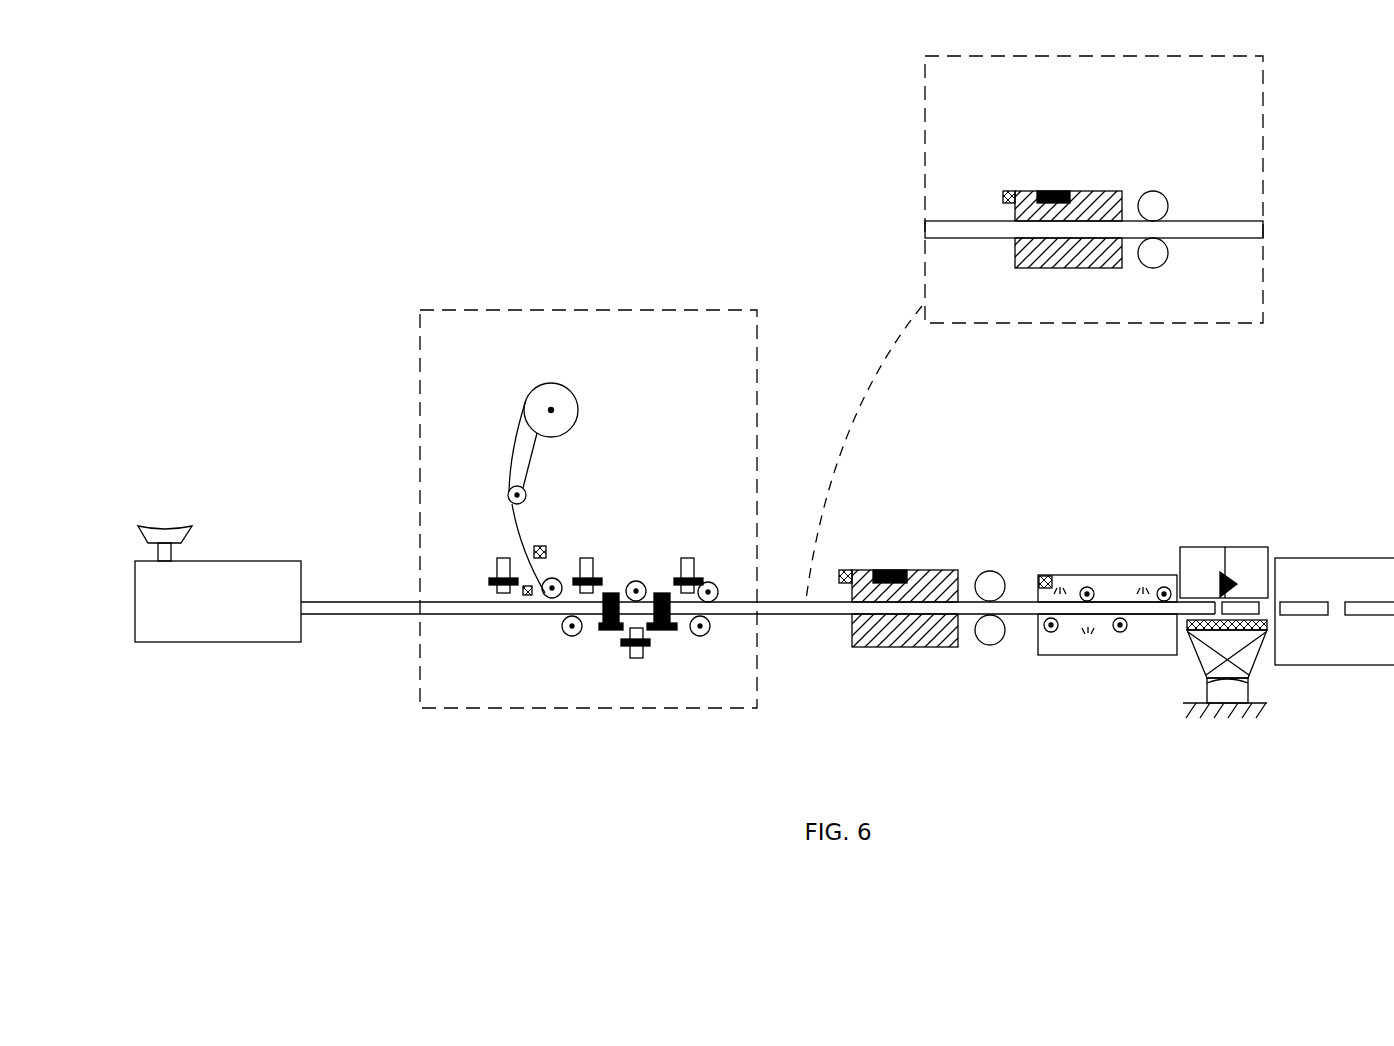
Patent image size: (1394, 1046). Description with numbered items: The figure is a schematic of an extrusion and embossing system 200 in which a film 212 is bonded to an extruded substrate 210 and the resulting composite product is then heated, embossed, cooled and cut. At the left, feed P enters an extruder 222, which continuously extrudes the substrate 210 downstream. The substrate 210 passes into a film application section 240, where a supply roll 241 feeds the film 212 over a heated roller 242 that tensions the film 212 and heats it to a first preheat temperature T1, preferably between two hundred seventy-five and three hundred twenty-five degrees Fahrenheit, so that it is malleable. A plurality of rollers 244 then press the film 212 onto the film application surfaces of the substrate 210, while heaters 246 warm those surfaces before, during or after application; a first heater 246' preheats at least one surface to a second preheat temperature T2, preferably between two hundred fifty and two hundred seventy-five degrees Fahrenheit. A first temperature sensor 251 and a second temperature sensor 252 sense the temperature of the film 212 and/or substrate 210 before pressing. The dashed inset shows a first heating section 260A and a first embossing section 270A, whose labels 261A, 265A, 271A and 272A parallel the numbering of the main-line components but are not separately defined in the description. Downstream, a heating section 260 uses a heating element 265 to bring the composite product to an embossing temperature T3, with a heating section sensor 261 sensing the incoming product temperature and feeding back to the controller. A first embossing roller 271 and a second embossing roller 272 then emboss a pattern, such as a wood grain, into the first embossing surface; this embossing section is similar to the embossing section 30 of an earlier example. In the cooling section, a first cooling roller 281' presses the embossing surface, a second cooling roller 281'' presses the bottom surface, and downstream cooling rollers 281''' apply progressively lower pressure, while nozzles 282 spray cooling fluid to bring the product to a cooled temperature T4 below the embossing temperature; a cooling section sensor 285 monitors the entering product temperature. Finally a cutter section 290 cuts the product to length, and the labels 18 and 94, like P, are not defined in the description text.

The system 18 is at (781, 222).
The embossing section 30 is at (406, 724).
The downstream processing station 94 is at (1315, 558).
The extrusion and embossing system 200 is at (692, 256).
The substrate 210 is at (351, 600).
The film 212 is at (513, 522).
The extruder 222 is at (197, 632).
The film application section 240 is at (498, 310).
The supply roll 241 is at (552, 393).
The heated roller 242 is at (524, 490).
The rollers 244 is at (556, 580).
The heaters 246 is at (648, 602).
The first heater 246' is at (441, 534).
The first temperature sensor 251 is at (540, 545).
The second temperature sensor 252 is at (522, 594).
The heating section 260 is at (932, 568).
The heating section sensor 261 is at (845, 568).
The heating element 265 is at (888, 568).
The first embossing roller 271 is at (988, 572).
The second embossing roller 272 is at (993, 645).
The first cooling roller 281' is at (1108, 551).
The second cooling roller 281'' is at (1053, 695).
The downstream cooling rollers 281''' is at (1164, 625).
The nozzles 282 is at (1143, 582).
The cooling section sensor 285 is at (1045, 573).
The cutter section 290 is at (1237, 547).
The first heating section 260A is at (1088, 190).
The temperature sensor 261A is at (1003, 194).
The heating element 265A is at (1045, 190).
The first embossing section 270A is at (1183, 125).
The upper nip roller 271A is at (1152, 196).
The lower nip roller 272A is at (1153, 258).
The polymer feed P is at (164, 502).
The first preheat temperature T1 is at (540, 558).
The second preheat temperature T2 is at (527, 612).
The embossing temperature T3 is at (967, 607).
The cooled temperature T4 is at (1183, 610).